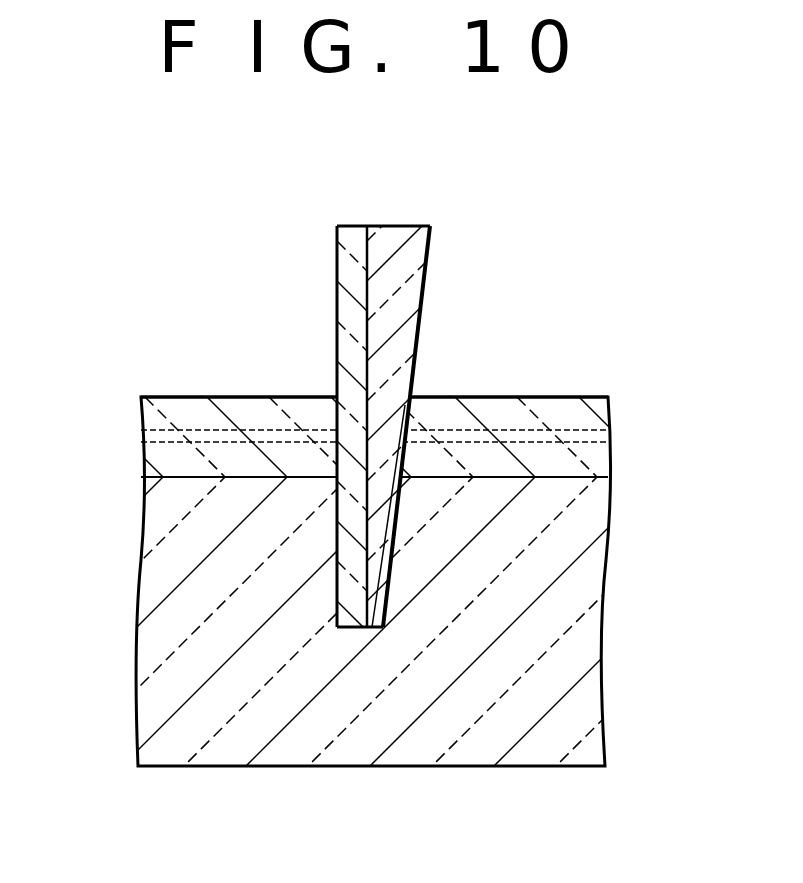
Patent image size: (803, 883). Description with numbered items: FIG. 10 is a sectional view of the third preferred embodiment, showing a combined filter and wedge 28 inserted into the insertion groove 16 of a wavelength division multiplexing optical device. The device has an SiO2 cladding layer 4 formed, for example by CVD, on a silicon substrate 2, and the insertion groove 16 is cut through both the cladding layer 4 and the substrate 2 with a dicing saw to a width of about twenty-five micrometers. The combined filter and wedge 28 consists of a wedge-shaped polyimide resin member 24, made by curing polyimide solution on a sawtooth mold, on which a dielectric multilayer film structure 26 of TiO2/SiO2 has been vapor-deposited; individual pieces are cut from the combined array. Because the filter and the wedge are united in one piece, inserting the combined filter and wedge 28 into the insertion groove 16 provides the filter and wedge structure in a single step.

The Si substrate 2 is at (401, 583).
The cladding layer 4 is at (593, 405).
The insertion groove 16 is at (393, 502).
The wedge-shaped polyimide resin member 24 is at (418, 254).
The dielectric multilayer film structure 26 is at (352, 232).
The combined filter and wedge 28 is at (397, 391).